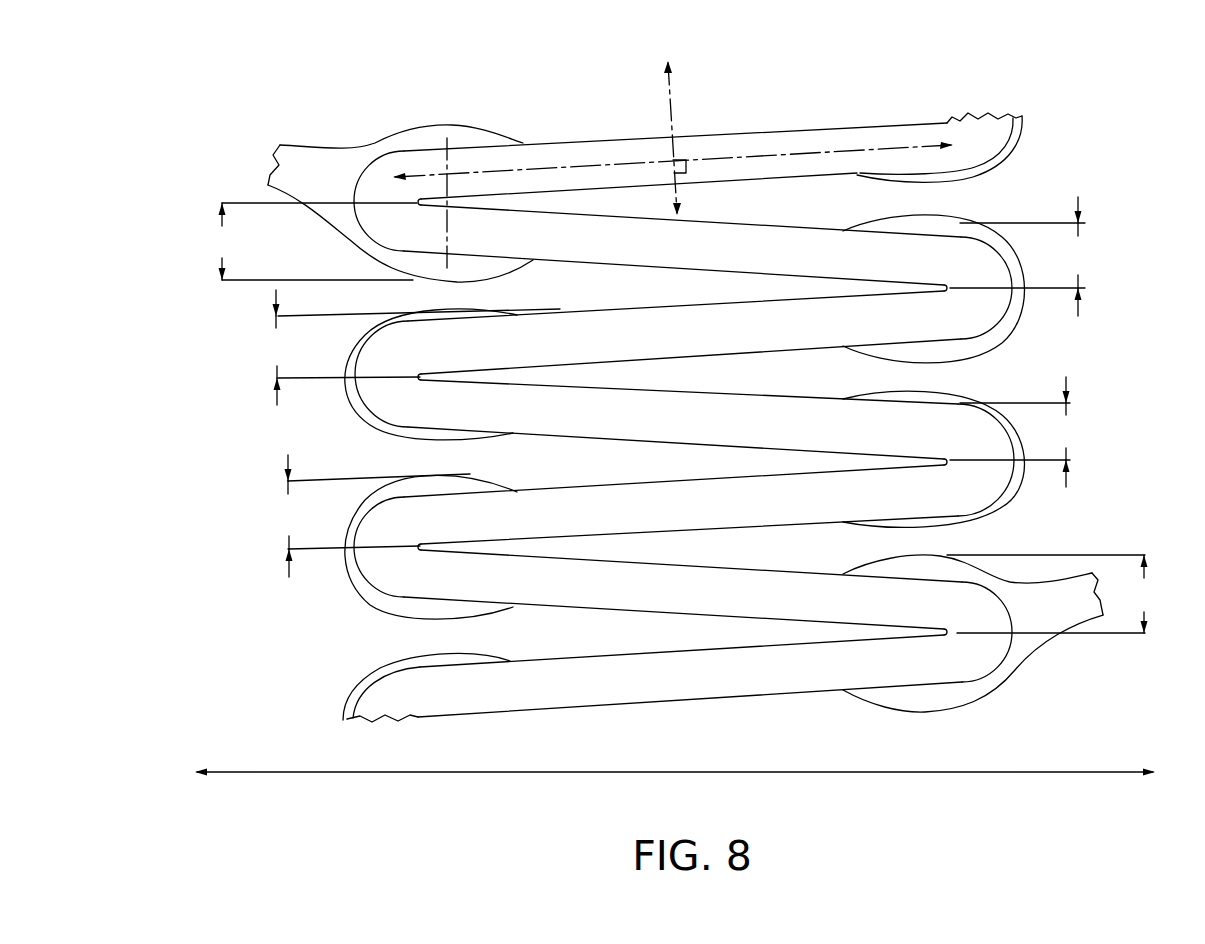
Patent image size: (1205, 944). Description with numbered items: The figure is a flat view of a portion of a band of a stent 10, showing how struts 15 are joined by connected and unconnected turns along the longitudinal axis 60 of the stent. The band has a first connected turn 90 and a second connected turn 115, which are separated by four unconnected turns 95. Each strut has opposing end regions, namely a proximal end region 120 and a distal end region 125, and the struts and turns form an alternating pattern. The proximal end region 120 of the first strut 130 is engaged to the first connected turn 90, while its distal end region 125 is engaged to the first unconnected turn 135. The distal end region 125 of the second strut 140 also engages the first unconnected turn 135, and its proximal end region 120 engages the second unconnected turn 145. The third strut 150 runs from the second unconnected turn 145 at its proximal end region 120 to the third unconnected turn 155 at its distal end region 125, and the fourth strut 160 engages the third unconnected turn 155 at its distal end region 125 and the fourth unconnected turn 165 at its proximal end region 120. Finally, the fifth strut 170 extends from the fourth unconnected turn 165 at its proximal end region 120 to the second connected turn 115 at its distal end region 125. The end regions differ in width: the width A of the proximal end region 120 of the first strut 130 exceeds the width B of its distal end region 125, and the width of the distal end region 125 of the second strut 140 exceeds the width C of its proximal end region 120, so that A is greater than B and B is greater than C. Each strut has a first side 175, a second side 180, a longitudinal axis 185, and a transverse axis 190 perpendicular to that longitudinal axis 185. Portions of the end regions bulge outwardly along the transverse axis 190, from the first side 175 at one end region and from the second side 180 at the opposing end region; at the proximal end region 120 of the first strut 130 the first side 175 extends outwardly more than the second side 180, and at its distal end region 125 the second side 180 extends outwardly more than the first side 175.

The stent 10 is at (168, 138).
The strut 15 is at (553, 160).
The longitudinal axis 60 is at (287, 770).
The first connected turn 90 is at (337, 170).
The unconnected turns 95 is at (993, 312).
The second connected turn 115 is at (985, 653).
The proximal end region 120 is at (448, 249).
The distal end region 125 is at (902, 275).
The first strut 130 is at (690, 260).
The first unconnected turn 135 is at (990, 262).
The second strut 140 is at (664, 343).
The second unconnected turn 145 is at (378, 390).
The third strut 150 is at (668, 427).
The third unconnected turn 155 is at (992, 482).
The fourth strut 160 is at (664, 510).
The fourth unconnected turn 165 is at (385, 567).
The fifth strut 170 is at (664, 598).
The first side 175 is at (548, 261).
The second side 180 is at (812, 224).
The longitudinal axis 185 is at (868, 150).
The transverse axis 190 is at (668, 100).